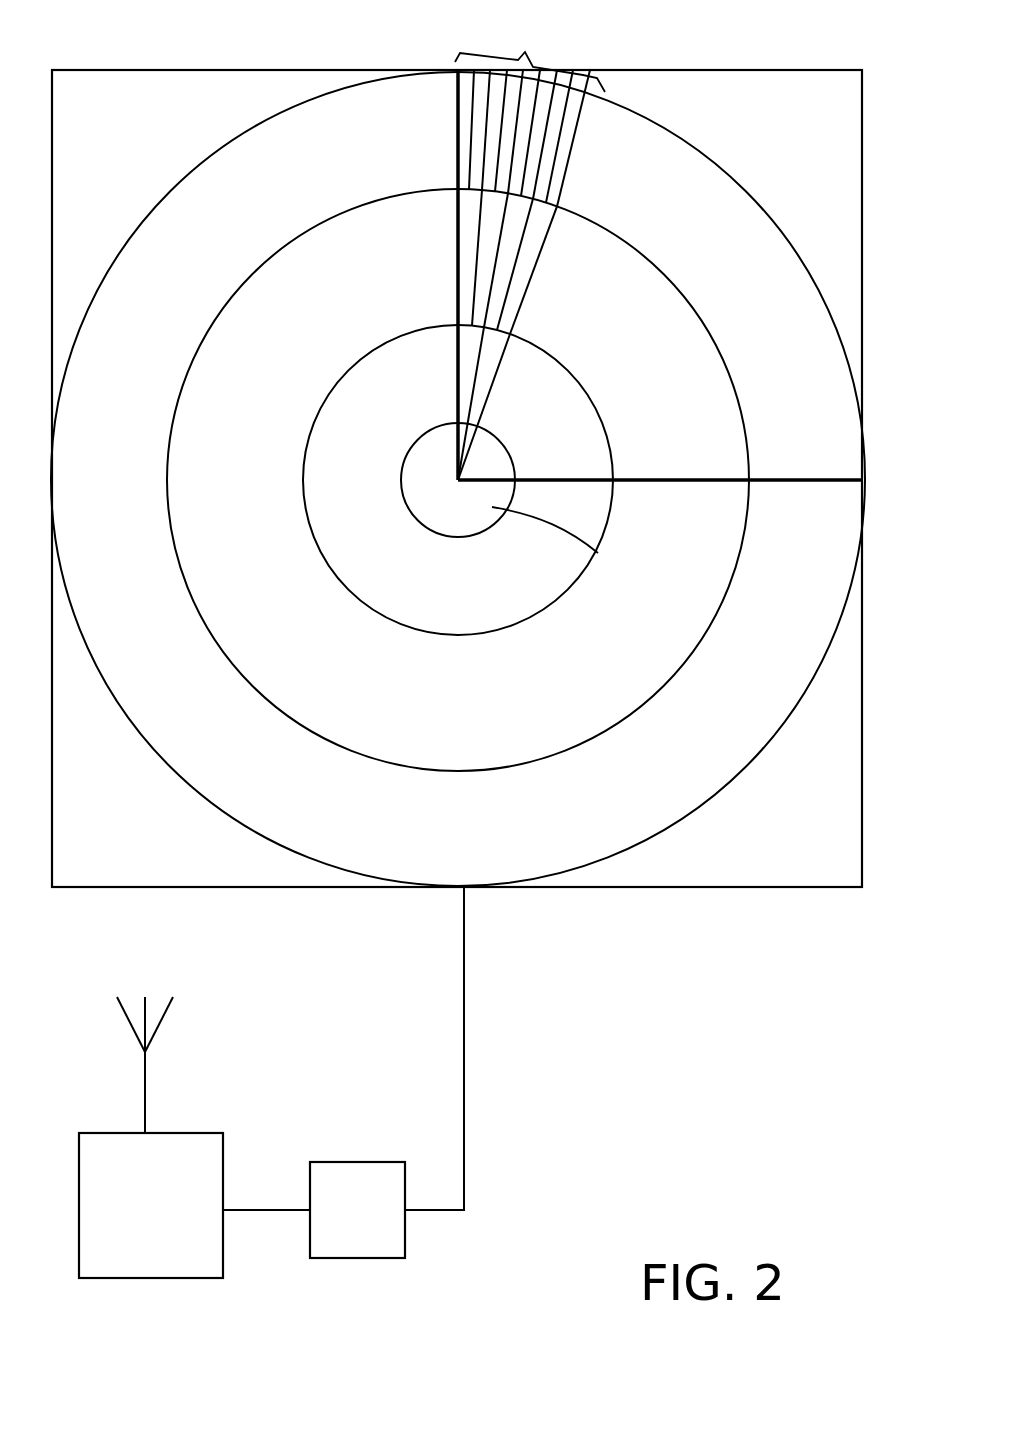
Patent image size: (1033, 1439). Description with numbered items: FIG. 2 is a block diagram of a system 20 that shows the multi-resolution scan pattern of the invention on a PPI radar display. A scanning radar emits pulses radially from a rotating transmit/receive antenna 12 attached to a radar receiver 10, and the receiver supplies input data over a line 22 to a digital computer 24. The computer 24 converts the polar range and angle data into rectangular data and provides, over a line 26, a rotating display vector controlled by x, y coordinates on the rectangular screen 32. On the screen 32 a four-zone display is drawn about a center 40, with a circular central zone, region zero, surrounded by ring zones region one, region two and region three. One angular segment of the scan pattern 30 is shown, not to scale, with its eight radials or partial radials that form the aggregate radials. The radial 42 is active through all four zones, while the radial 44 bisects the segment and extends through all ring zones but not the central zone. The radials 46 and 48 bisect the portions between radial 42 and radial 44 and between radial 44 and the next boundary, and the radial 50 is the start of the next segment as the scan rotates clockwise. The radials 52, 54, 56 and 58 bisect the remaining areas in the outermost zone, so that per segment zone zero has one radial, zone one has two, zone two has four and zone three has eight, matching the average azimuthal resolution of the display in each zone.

The radar receiver 10 is at (155, 1262).
The transmit/receive antenna 12 is at (147, 1093).
The display system 20 is at (458, 506).
The input data line 22 is at (273, 1213).
The digital computer 24 is at (370, 1258).
The display output line 26 is at (467, 1103).
The scan pattern segment 30 is at (530, 54).
The screen 32 is at (808, 844).
The center point 40 is at (458, 483).
The radial 42 is at (455, 230).
The bisecting radial 44 is at (473, 382).
The radial 46 is at (472, 281).
The radial 48 is at (520, 245).
The radial 50 is at (525, 297).
The radial 52 is at (468, 108).
The radial 54 is at (507, 113).
The radial 56 is at (525, 140).
The radial 58 is at (557, 162).